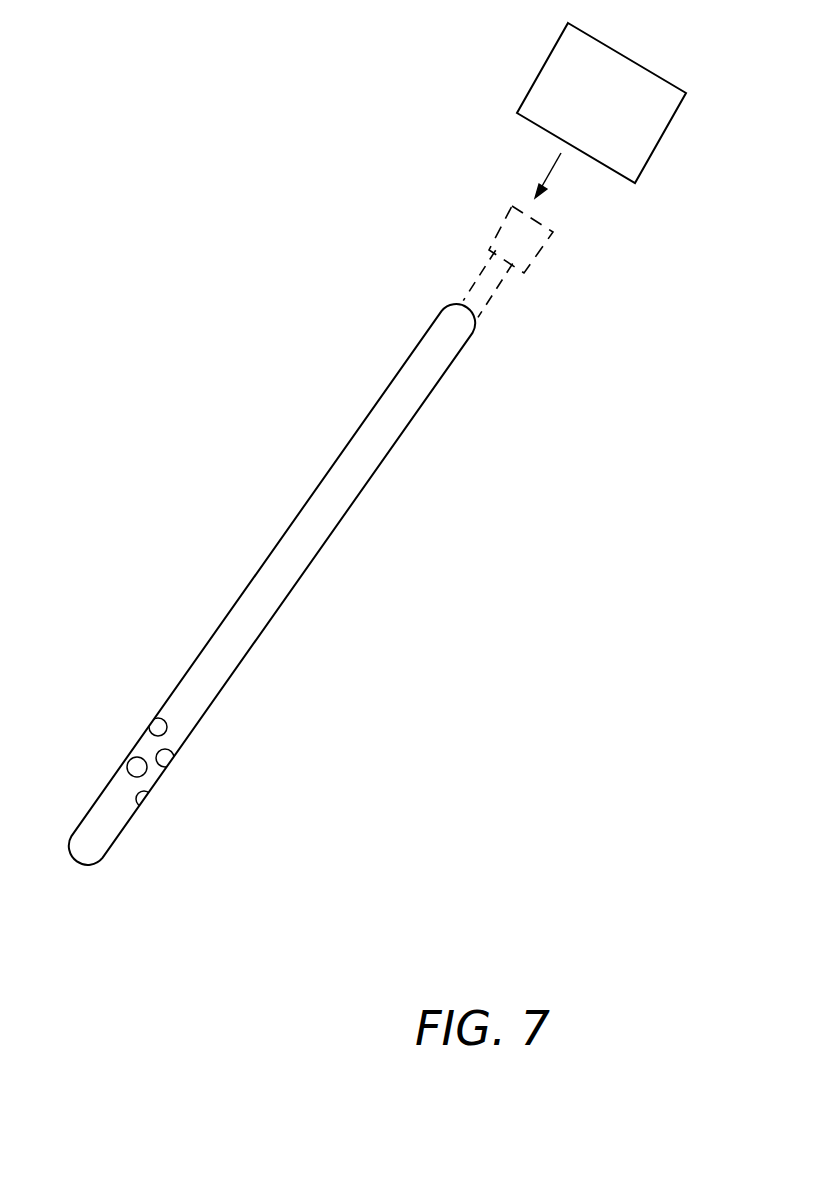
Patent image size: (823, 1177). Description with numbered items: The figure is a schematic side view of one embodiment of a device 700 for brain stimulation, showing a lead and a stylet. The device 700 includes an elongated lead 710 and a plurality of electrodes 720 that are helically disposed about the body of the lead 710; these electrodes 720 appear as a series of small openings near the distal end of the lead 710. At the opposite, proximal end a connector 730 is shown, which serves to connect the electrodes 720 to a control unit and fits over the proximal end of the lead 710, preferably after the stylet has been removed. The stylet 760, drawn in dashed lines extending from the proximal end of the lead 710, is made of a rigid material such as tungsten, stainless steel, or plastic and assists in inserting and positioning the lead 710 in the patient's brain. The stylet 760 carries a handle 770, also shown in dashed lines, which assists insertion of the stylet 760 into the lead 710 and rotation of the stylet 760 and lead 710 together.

The device 700 is at (212, 502).
The lead 710 is at (257, 573).
The electrodes 720 is at (128, 768).
The connector 730 is at (663, 132).
The stylet 760 is at (498, 256).
The handle 770 is at (502, 218).